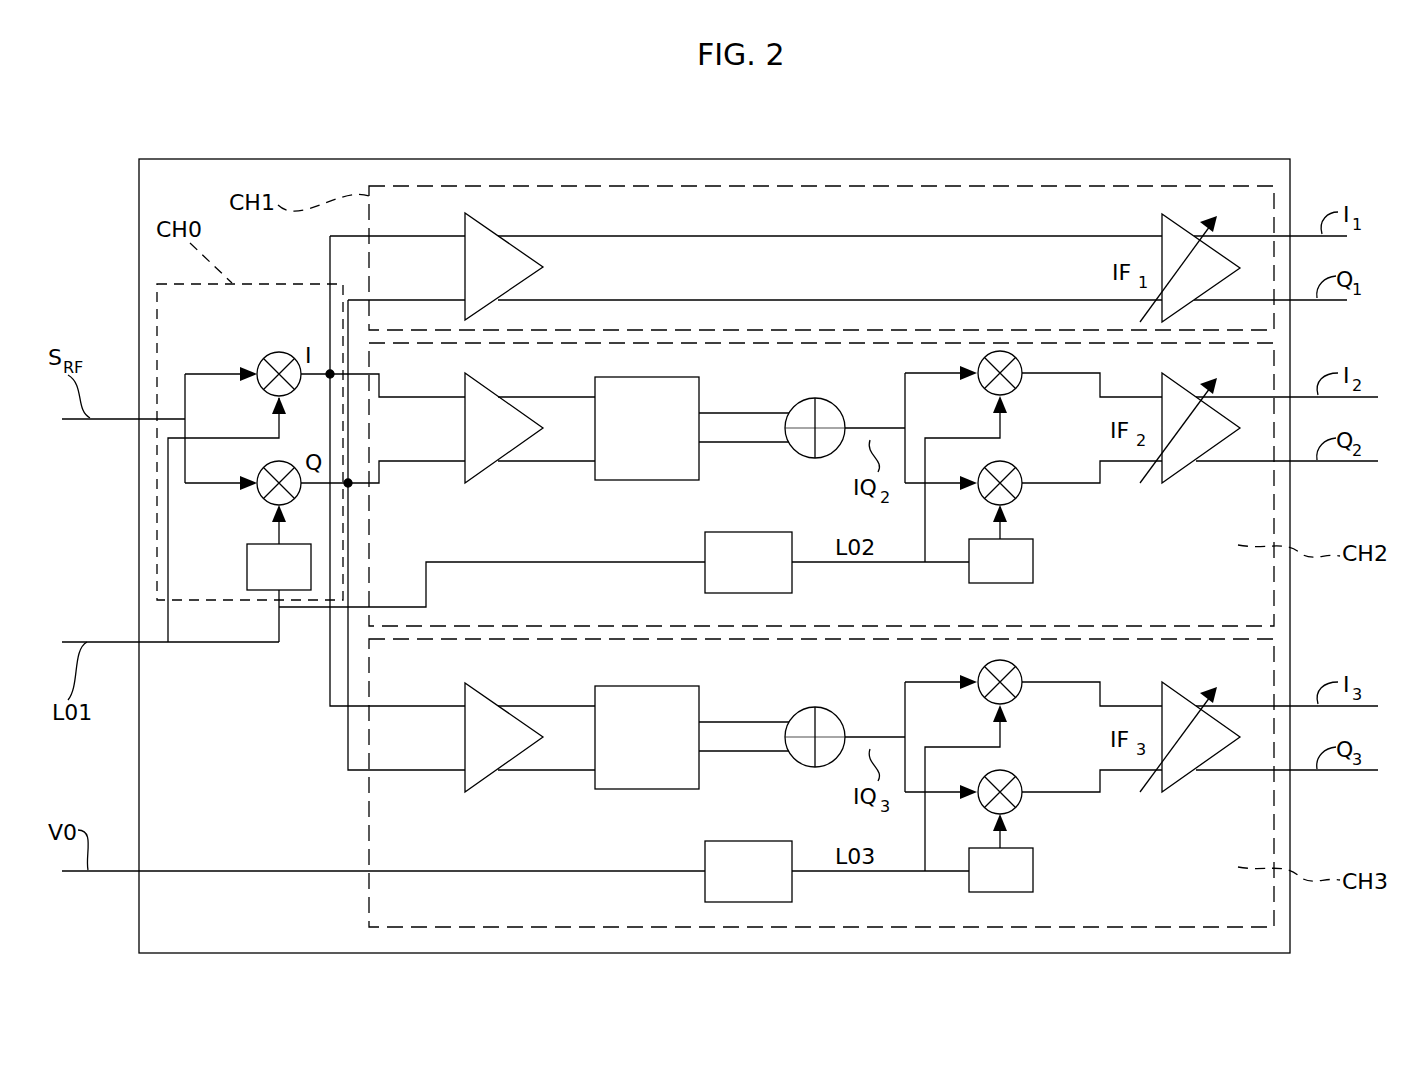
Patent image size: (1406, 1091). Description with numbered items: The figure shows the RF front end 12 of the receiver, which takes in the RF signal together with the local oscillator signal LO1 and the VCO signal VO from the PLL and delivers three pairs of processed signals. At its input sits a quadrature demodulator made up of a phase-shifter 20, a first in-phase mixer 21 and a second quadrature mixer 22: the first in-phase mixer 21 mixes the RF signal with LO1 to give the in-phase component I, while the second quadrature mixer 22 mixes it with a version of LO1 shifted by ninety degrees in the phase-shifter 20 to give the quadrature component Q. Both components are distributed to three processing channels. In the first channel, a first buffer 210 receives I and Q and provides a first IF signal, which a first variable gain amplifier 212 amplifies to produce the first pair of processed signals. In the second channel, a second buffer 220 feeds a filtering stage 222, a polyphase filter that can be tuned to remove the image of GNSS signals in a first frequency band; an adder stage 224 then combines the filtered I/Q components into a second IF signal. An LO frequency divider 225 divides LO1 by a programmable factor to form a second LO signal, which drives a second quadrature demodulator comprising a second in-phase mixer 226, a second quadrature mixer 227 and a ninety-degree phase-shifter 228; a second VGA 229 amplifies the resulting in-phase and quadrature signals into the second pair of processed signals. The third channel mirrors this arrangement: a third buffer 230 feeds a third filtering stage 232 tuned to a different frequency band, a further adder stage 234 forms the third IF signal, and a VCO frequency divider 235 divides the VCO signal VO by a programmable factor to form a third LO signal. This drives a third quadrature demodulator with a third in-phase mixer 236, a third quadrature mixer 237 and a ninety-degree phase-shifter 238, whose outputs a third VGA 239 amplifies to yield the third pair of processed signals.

The RF front end 12 is at (957, 163).
The phase-shifter 20 is at (265, 581).
The first in-phase mixer 21 is at (278, 361).
The second quadrature mixer 22 is at (268, 496).
The first buffer 210 is at (469, 279).
The first variable gain amplifier 212 is at (1160, 227).
The second buffer 220 is at (469, 440).
The filtering stage 222 is at (626, 417).
The adder stage 224 is at (803, 398).
The LO frequency divider 225 is at (727, 560).
The second in-phase mixer 226 is at (979, 576).
The second quadrature mixer 227 is at (1010, 392).
The 90° phase-shifter 228 is at (1010, 462).
The second VGA 229 is at (1173, 468).
The third buffer 230 is at (469, 749).
The third filtering stage 232 is at (626, 726).
The further adder stage 234 is at (803, 707).
The VCO frequency divider 235 is at (727, 869).
The third in-phase mixer 236 is at (979, 885).
The third quadrature mixer 237 is at (1010, 701).
The 90° phase-shifter 238 is at (1010, 771).
The third VGA 239 is at (1168, 778).